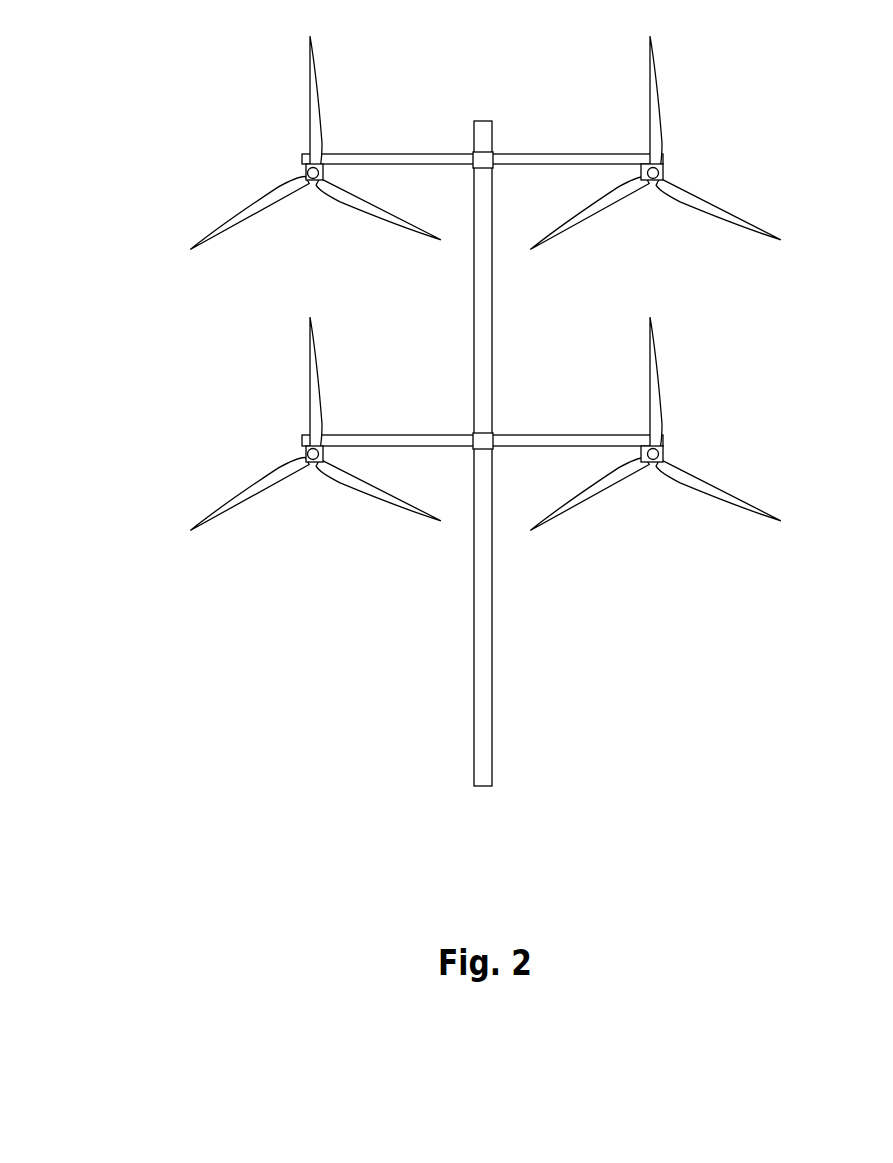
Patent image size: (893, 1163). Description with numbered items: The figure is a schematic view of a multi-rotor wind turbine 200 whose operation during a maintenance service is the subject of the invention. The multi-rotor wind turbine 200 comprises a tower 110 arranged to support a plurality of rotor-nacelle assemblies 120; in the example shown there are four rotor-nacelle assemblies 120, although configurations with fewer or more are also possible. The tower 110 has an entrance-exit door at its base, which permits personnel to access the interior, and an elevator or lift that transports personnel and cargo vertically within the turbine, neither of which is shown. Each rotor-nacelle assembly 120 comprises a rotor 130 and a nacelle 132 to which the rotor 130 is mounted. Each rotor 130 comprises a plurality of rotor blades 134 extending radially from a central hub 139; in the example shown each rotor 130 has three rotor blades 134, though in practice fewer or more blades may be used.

The tower 110 is at (485, 677).
The rotor-nacelle assembly 120 is at (410, 140).
The rotor 130 is at (271, 157).
The nacelle 132 is at (317, 204).
The rotor blade 134 is at (381, 103).
The central hub 139 is at (310, 178).
The multi-rotor wind turbine 200 is at (410, 393).